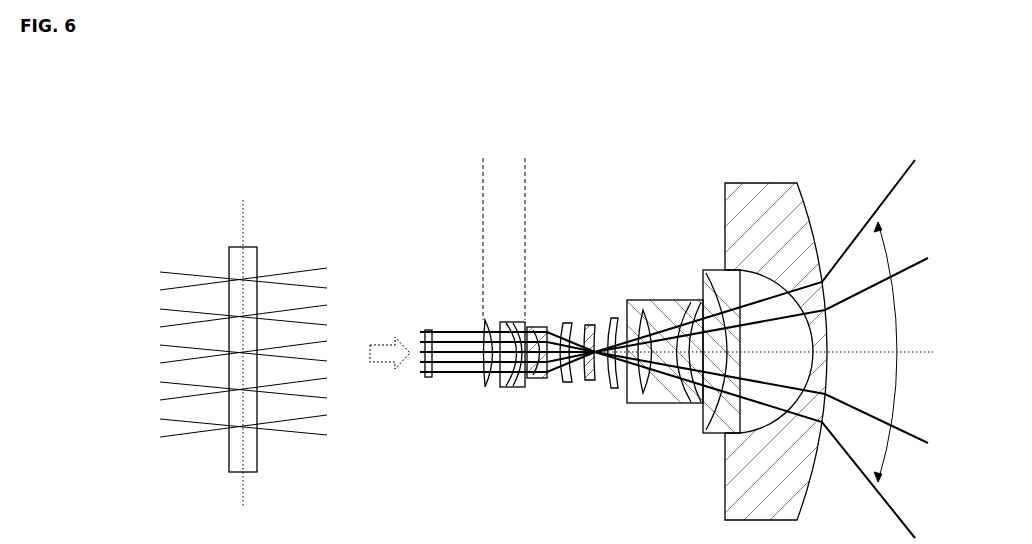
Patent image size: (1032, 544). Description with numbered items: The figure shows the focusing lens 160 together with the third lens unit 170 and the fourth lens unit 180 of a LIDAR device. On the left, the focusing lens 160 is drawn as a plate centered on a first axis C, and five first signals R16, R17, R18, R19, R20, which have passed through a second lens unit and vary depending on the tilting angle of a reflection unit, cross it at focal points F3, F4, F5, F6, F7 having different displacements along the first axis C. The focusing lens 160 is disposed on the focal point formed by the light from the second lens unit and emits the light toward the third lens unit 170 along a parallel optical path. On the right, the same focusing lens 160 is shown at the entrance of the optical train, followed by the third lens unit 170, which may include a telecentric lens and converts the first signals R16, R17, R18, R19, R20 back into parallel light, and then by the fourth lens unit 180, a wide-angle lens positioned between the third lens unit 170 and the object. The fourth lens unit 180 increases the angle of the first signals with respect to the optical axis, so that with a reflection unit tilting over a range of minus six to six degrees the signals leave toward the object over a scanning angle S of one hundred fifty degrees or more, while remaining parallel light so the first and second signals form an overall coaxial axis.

The focusing lens 160 is at (232, 248).
The third lens unit 170 is at (525, 157).
The fourth lens unit 180 is at (797, 156).
The first axis C is at (242, 343).
The scanning angle S is at (892, 352).
The focal point F3 is at (243, 280).
The focal point F4 is at (243, 317).
The focal point F5 is at (243, 353).
The focal point F6 is at (243, 390).
The focal point F7 is at (243, 427).
The first signal R16 is at (342, 271).
The first signal R17 is at (342, 308).
The first signal R18 is at (342, 344).
The first signal R19 is at (342, 381).
The first signal R20 is at (342, 418).